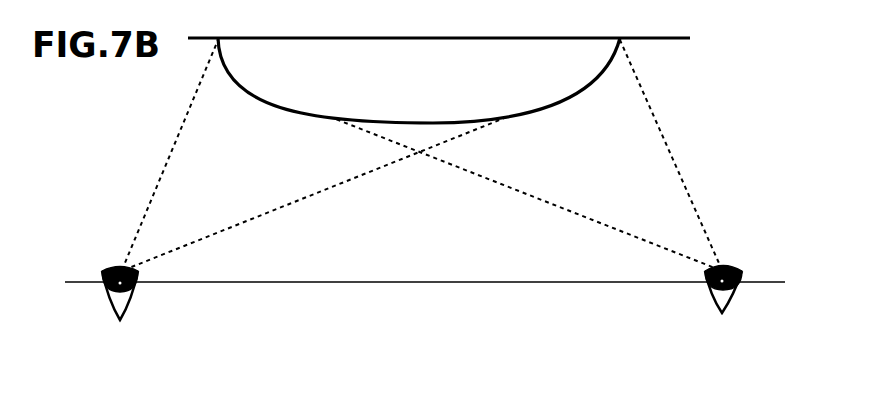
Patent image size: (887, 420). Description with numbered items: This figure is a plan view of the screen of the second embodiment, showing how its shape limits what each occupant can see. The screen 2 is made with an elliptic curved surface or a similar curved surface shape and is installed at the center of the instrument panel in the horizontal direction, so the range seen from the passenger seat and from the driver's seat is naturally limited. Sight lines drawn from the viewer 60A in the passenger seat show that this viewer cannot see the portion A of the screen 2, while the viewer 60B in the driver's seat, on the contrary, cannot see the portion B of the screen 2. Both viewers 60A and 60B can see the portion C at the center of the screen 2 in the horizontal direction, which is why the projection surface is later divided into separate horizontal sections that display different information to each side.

The screen 2 is at (577, 92).
The viewer in the passenger seat 60A is at (133, 298).
The viewer in the driver's seat 60B is at (712, 297).